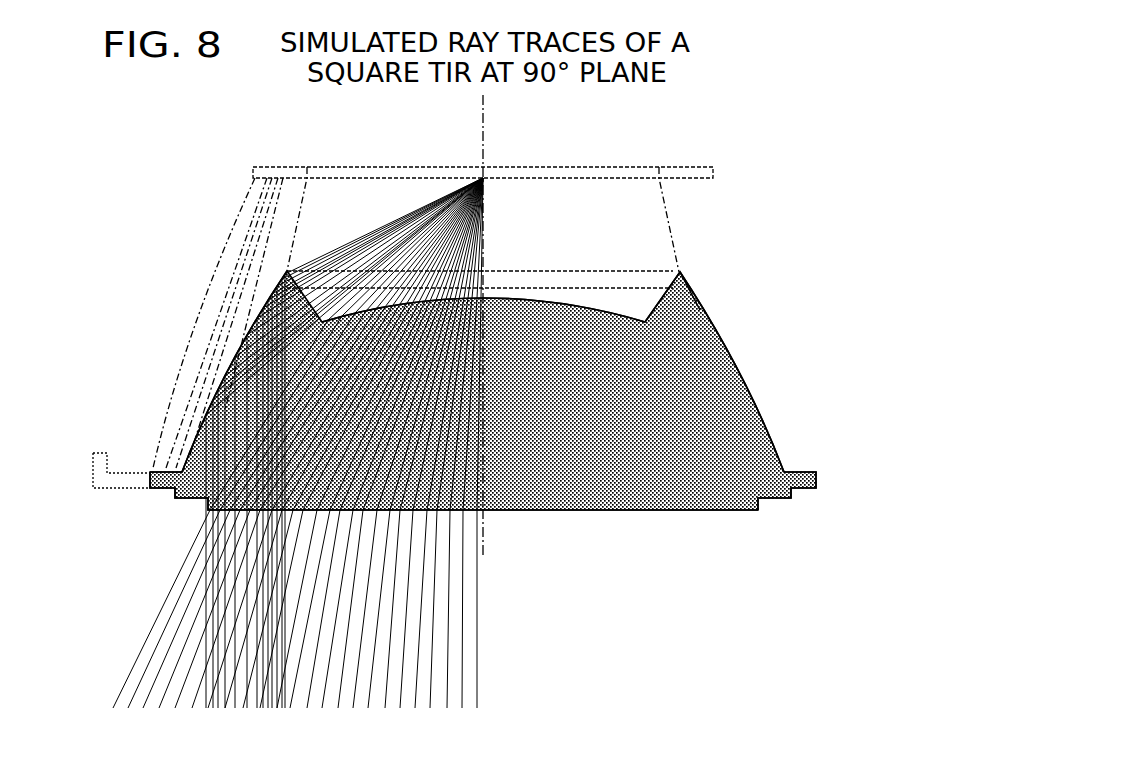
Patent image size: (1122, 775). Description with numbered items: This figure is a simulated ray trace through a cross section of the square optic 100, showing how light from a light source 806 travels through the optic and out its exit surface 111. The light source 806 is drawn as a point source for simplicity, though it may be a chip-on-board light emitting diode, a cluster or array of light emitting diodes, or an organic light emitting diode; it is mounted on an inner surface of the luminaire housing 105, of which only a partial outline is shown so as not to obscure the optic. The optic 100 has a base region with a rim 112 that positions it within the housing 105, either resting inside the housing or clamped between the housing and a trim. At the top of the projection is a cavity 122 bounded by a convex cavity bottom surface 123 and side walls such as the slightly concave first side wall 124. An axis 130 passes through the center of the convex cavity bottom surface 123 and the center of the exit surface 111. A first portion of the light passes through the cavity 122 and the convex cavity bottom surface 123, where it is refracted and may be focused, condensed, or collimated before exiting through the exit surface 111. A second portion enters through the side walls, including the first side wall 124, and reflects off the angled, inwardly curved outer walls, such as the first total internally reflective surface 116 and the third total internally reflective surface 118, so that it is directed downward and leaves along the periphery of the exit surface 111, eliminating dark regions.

The square optic 100 is at (860, 262).
The luminaire housing 105 is at (240, 200).
The exit surface 111 is at (642, 510).
The rim 112 is at (813, 470).
The first total internally reflective surface 116 is at (728, 348).
The third total internally reflective surface 118 is at (195, 442).
The cavity 122 is at (604, 282).
The convex cavity bottom surface 123 is at (548, 304).
The first side wall 124 is at (660, 293).
The axis 130 is at (483, 105).
The light source 806 is at (480, 177).